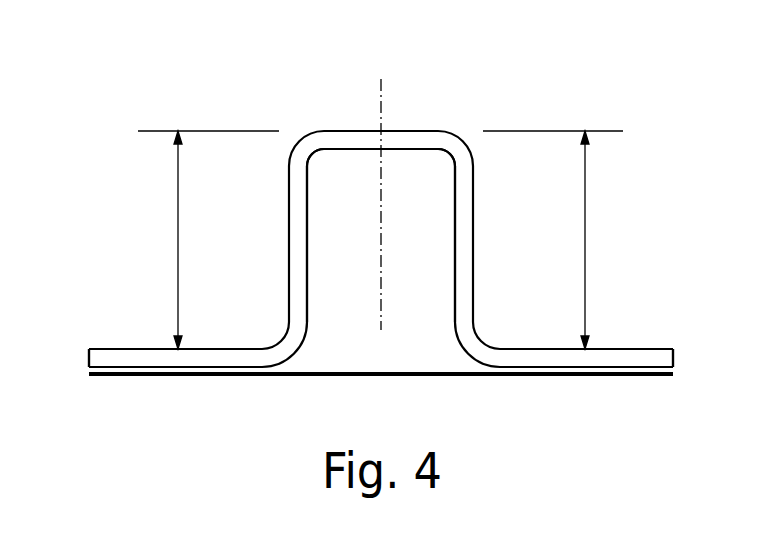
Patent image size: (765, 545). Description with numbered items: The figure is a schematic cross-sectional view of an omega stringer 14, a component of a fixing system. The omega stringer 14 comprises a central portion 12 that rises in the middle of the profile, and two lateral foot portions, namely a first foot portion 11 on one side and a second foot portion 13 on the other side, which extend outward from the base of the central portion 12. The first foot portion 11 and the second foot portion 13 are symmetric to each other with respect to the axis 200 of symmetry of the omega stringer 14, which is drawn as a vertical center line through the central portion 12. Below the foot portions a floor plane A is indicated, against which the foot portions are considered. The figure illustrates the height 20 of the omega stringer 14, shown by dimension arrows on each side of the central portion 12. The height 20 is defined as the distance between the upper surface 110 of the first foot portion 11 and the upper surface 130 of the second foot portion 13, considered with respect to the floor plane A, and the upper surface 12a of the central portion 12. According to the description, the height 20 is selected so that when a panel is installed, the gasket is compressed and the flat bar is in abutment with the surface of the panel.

The omega stringer 14 is at (272, 85).
The axis of symmetry 200 is at (381, 79).
The upper surface of the central portion 12a is at (443, 131).
The central portion 12 is at (393, 145).
The height 20 is at (178, 236).
The upper surface of the first foot portion 110 is at (105, 349).
The first foot portion 11 is at (178, 358).
The upper surface of the second foot portion 130 is at (658, 349).
The second foot portion 13 is at (583, 358).
The floor plane A is at (658, 376).